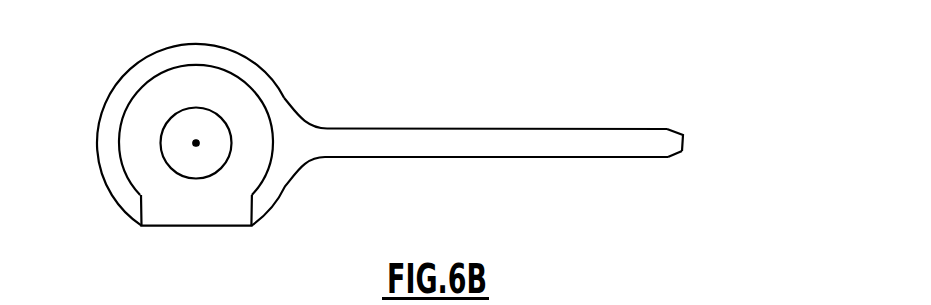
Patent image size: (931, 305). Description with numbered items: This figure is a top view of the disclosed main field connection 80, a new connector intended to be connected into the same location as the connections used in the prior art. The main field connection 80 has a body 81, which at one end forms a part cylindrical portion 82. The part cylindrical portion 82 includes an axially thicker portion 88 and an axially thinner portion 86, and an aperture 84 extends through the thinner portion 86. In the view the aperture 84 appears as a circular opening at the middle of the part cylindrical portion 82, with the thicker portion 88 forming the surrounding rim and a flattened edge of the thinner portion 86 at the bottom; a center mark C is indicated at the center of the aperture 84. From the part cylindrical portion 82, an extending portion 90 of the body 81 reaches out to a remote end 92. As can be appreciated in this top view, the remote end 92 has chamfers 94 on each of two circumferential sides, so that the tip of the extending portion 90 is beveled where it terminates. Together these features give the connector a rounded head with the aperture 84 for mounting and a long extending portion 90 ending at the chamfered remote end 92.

The main field connection 80 is at (747, 109).
The body 81 is at (378, 140).
The part cylindrical portion 82 is at (137, 127).
The aperture 84 is at (215, 132).
The axially thinner portion 86 is at (168, 218).
The axially thicker portion 88 is at (115, 182).
The extending portion 90 is at (435, 158).
The remote end 92 is at (683, 138).
The chamfers 94 is at (673, 157).
The center C is at (194, 141).